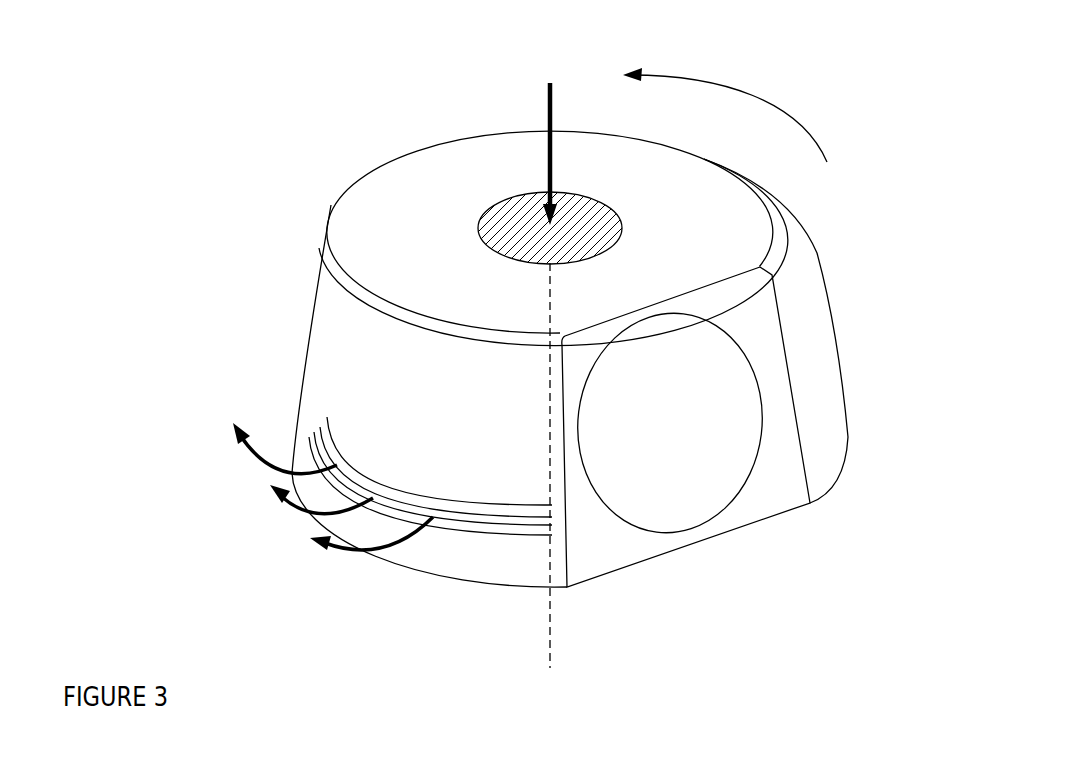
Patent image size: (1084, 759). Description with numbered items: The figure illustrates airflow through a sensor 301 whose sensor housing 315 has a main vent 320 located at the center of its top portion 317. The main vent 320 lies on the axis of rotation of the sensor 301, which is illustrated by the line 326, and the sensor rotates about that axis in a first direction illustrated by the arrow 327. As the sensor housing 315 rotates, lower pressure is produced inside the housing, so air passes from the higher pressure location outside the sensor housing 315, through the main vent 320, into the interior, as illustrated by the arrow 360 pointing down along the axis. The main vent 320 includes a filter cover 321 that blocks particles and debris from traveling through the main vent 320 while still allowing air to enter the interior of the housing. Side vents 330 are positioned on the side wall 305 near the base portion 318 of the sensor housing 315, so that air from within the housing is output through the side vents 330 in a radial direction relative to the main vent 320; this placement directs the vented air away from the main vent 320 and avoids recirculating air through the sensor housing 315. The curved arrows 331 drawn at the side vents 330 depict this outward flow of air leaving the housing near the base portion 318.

The sensor 301 is at (850, 245).
The side wall 305 is at (316, 290).
The sensor housing 315 is at (360, 323).
The top portion 317 is at (403, 164).
The base portion 318 is at (412, 567).
The main vent 320 is at (478, 233).
The filter cover 321 is at (518, 209).
The line 326 is at (548, 632).
The arrow 327 is at (792, 110).
The side vents 330 is at (320, 425).
The flow arrows 331 is at (313, 538).
The arrow 360 is at (548, 95).